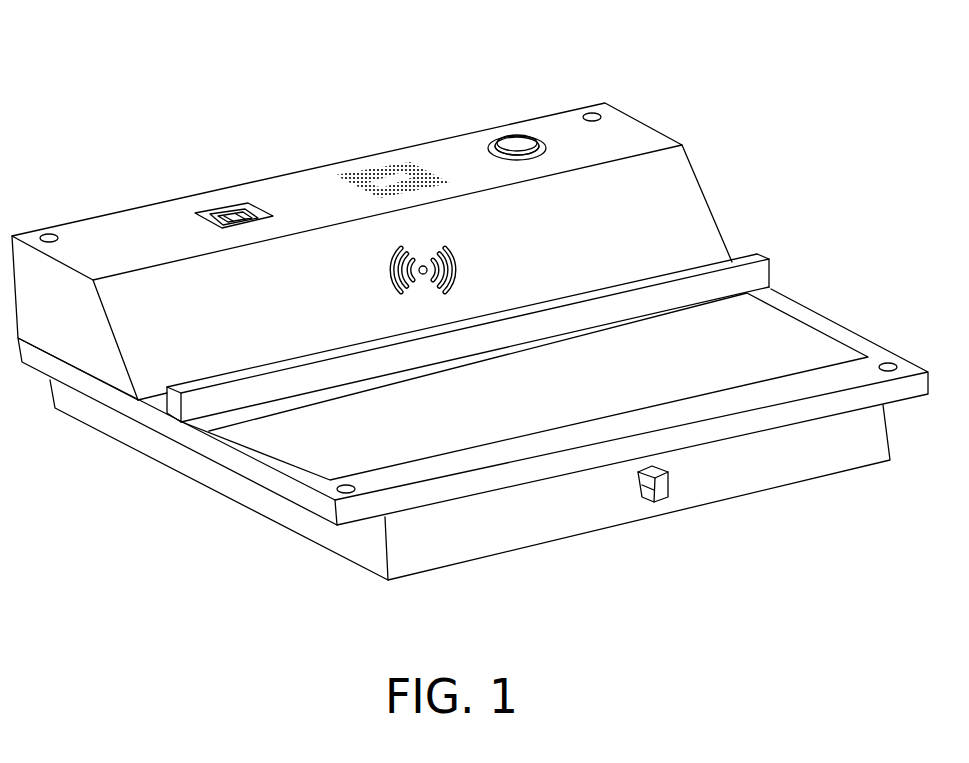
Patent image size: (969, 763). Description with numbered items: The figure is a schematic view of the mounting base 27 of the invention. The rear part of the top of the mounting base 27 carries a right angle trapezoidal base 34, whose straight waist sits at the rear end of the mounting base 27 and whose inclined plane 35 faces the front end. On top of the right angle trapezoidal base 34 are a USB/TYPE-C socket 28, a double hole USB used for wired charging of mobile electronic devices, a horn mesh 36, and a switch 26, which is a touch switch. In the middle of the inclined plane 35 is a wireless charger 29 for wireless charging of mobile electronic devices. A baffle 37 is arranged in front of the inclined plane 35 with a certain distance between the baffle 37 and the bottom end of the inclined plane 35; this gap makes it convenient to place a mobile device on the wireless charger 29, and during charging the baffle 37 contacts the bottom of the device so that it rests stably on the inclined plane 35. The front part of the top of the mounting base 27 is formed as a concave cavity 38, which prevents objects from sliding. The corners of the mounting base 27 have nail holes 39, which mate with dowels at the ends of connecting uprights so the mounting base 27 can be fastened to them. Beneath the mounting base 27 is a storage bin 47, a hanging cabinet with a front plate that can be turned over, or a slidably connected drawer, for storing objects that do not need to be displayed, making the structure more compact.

The switch 26 is at (560, 87).
The mounting base 27 is at (205, 480).
The USB/TYPE-C socket 28 is at (271, 160).
The wireless charger 29 is at (279, 403).
The right angle trapezoidal base 34 is at (87, 267).
The inclined plane 35 is at (396, 237).
The horn mesh 36 is at (419, 125).
The baffle 37 is at (497, 286).
The concave cavity 38 is at (532, 349).
The nail holes 39 is at (473, 443).
The storage bin 47 is at (640, 492).